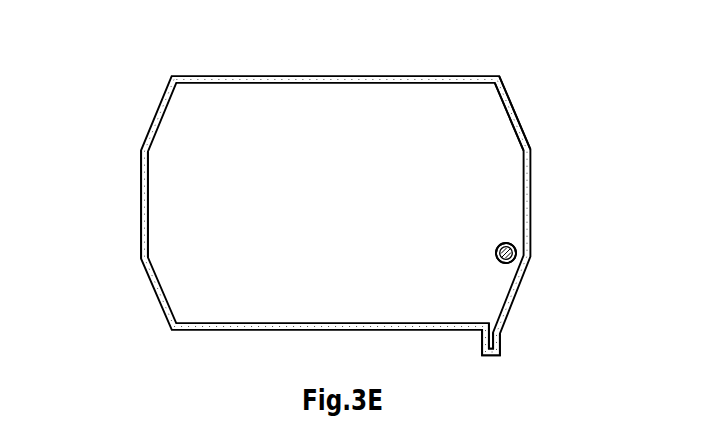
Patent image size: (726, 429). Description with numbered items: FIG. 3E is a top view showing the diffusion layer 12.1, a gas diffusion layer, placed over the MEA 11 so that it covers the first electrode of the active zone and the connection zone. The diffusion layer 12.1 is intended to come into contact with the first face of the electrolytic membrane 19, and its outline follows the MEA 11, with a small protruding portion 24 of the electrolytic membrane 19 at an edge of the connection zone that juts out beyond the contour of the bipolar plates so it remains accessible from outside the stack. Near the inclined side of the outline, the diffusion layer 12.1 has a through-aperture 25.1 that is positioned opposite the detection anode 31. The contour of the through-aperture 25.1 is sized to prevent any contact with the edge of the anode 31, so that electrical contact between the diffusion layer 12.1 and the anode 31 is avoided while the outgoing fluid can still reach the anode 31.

The MEA 11 is at (145, 126).
The diffusion layer 12.1 is at (156, 194).
The electrolytic membrane 19 is at (534, 130).
The protruding portion 24 is at (499, 337).
The through-aperture 25.1 is at (513, 234).
The detection anode 31 is at (517, 255).